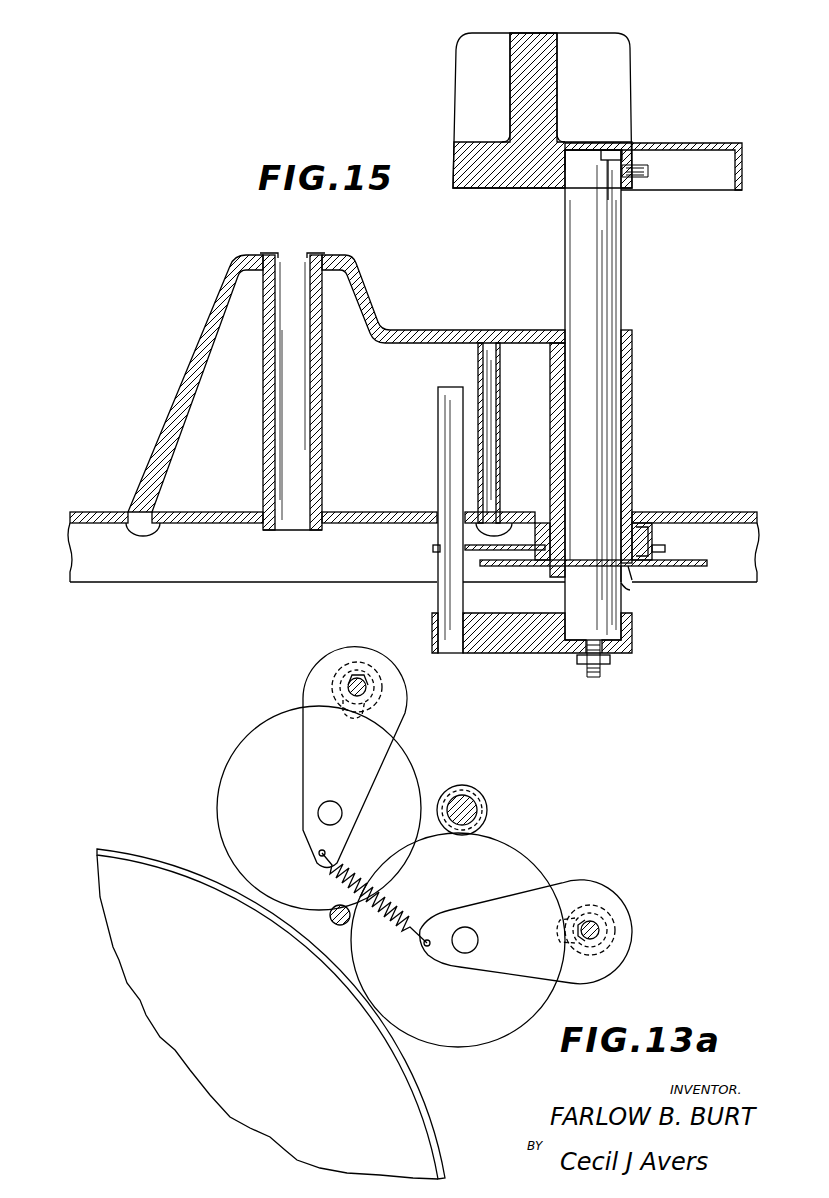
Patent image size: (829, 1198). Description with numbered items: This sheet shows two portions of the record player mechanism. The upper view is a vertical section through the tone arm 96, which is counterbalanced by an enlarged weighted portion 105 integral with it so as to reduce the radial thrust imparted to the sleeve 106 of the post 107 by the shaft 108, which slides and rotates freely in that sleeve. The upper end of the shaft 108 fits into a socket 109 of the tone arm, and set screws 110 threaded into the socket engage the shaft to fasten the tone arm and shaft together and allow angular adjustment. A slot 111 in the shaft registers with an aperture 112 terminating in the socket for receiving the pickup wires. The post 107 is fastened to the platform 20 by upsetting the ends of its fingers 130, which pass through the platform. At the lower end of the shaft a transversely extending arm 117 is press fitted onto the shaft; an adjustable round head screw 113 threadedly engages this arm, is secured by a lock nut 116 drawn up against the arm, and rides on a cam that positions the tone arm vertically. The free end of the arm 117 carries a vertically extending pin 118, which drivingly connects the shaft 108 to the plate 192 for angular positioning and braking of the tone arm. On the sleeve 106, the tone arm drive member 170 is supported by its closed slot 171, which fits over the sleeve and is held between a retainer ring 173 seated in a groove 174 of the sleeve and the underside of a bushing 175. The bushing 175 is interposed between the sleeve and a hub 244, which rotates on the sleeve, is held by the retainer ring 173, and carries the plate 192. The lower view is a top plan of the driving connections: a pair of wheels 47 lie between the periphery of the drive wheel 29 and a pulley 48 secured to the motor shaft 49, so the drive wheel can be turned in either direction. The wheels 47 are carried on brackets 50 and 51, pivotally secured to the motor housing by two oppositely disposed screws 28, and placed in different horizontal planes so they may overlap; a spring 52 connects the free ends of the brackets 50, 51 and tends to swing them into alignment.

In FIG. 15, the enlarged weighted portion 105 is at (470, 113).
In FIG. 15, the tone arm 96 is at (690, 147).
In FIG. 15, the shaft 108 is at (605, 305).
In FIG. 15, the socket 109 is at (582, 146).
In FIG. 15, the aperture 112 is at (622, 155).
In FIG. 15, the slot 111 is at (603, 163).
In FIG. 15, the set screws 110 is at (648, 171).
In FIG. 15, the post 107 is at (405, 335).
In FIG. 15, the sleeve 106 is at (628, 458).
In FIG. 15, the pin 118 is at (453, 433).
In FIG. 15, the platform 20 is at (108, 575).
In FIG. 15, the fingers 130 is at (143, 536).
In FIG. 15, the arm 117 is at (628, 641).
In FIG. 15, the round head screw 113 is at (593, 680).
In FIG. 15, the lock nut 116 is at (610, 661).
In FIG. 15, the hub 244 is at (652, 523).
In FIG. 15, the bushing 175 is at (650, 538).
In FIG. 15, the plate 192 is at (660, 549).
In FIG. 15, the tone arm drive member 170 is at (700, 564).
In FIG. 15, the slot 171 is at (525, 563).
In FIG. 15, the retainer ring 173 is at (638, 575).
In FIG. 15, the groove 174 is at (624, 593).
In FIG. 13A, the wheels 47 is at (233, 800).
In FIG. 13A, the bracket 50 is at (313, 679).
In FIG. 13A, the screws 28 is at (362, 687).
In FIG. 13A, the pulley 48 is at (488, 811).
In FIG. 13A, the shaft 49 is at (472, 802).
In FIG. 13A, the bracket 51 is at (597, 893).
In FIG. 13A, the spring 52 is at (356, 860).
In FIG. 13A, the drive wheel 29 is at (410, 1108).